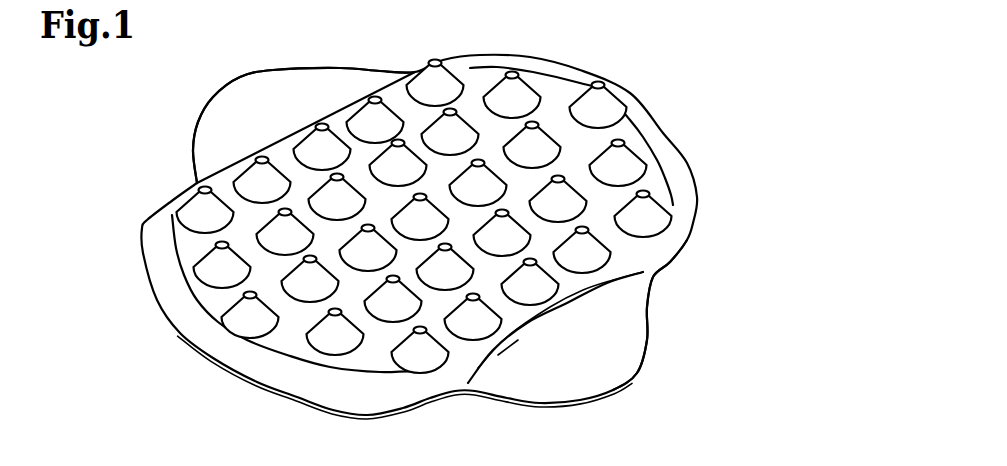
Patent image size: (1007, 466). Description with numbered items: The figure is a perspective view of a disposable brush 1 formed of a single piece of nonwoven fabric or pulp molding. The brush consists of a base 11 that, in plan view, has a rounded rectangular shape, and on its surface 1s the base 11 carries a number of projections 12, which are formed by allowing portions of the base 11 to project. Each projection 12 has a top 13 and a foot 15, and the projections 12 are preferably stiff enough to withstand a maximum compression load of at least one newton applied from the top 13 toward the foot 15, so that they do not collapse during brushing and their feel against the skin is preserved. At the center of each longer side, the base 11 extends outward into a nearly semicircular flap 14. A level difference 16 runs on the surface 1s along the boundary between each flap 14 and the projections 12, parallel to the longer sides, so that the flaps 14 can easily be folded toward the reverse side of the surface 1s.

The disposable brush 1 is at (712, 72).
The base 11 is at (688, 188).
The projections 12 is at (461, 237).
The top 13 is at (649, 196).
The flap 14 is at (198, 124).
The foot 15 is at (670, 222).
The level difference 16 is at (342, 115).
The surface 1s is at (344, 391).